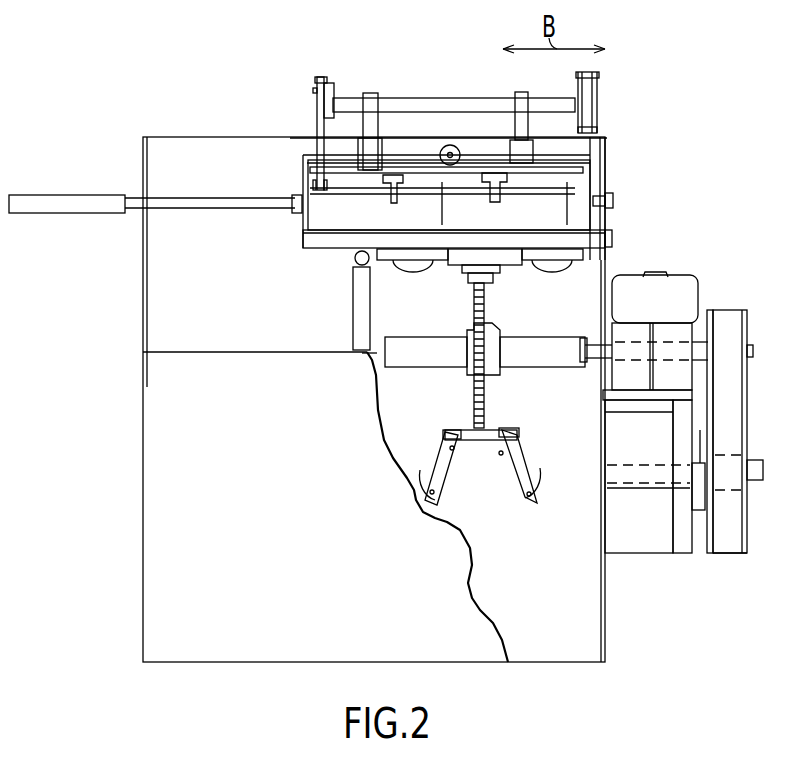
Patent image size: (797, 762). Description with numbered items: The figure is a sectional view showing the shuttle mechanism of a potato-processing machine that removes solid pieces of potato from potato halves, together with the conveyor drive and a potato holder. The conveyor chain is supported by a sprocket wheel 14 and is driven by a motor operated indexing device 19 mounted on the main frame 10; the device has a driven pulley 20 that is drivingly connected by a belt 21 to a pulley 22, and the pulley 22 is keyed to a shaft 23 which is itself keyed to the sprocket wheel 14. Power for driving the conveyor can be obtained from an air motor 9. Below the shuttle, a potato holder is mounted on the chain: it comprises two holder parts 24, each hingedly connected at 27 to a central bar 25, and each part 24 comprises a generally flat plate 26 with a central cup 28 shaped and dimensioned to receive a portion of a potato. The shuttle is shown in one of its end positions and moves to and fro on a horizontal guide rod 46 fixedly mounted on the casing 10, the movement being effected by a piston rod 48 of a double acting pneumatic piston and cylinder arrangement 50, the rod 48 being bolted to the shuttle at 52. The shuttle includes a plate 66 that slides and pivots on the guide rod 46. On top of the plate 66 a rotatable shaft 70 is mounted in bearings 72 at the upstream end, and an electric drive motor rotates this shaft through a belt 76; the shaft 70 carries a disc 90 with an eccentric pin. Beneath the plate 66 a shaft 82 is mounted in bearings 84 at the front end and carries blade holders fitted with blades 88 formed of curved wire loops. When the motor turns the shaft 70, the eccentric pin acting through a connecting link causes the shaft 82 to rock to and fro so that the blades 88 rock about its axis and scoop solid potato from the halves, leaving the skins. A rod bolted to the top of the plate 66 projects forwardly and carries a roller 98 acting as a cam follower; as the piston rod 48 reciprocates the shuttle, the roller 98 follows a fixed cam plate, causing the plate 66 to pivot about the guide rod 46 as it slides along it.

The air motor 9 is at (655, 297).
The main frame 10 is at (374, 399).
The sprocket wheel 14 is at (486, 330).
The motor operated indexing device 19 is at (643, 533).
The driven pulley 20 is at (702, 530).
The belt 21 is at (737, 413).
The pulley 22 is at (748, 325).
The shaft 23 is at (697, 342).
The holder part 24 is at (386, 263).
The central bar 25 is at (478, 441).
The flat plate 26 is at (530, 500).
The hinge connection 27 is at (453, 430).
The central cup 28 is at (535, 455).
The horizontal guide rod 46 is at (614, 200).
The piston rod 48 is at (209, 199).
The double acting pneumatic piston and cylinder arrangement 50 is at (66, 198).
The bolted connection 52 is at (297, 214).
The plate 66 is at (592, 158).
The rotatable shaft 70 is at (426, 98).
The bearings 72 is at (368, 93).
The belt 76 is at (598, 92).
The shaft 82 is at (470, 188).
The bearings 84 is at (392, 203).
The blades 88 is at (569, 218).
The disc 90 is at (336, 68).
The roller 98 is at (444, 153).